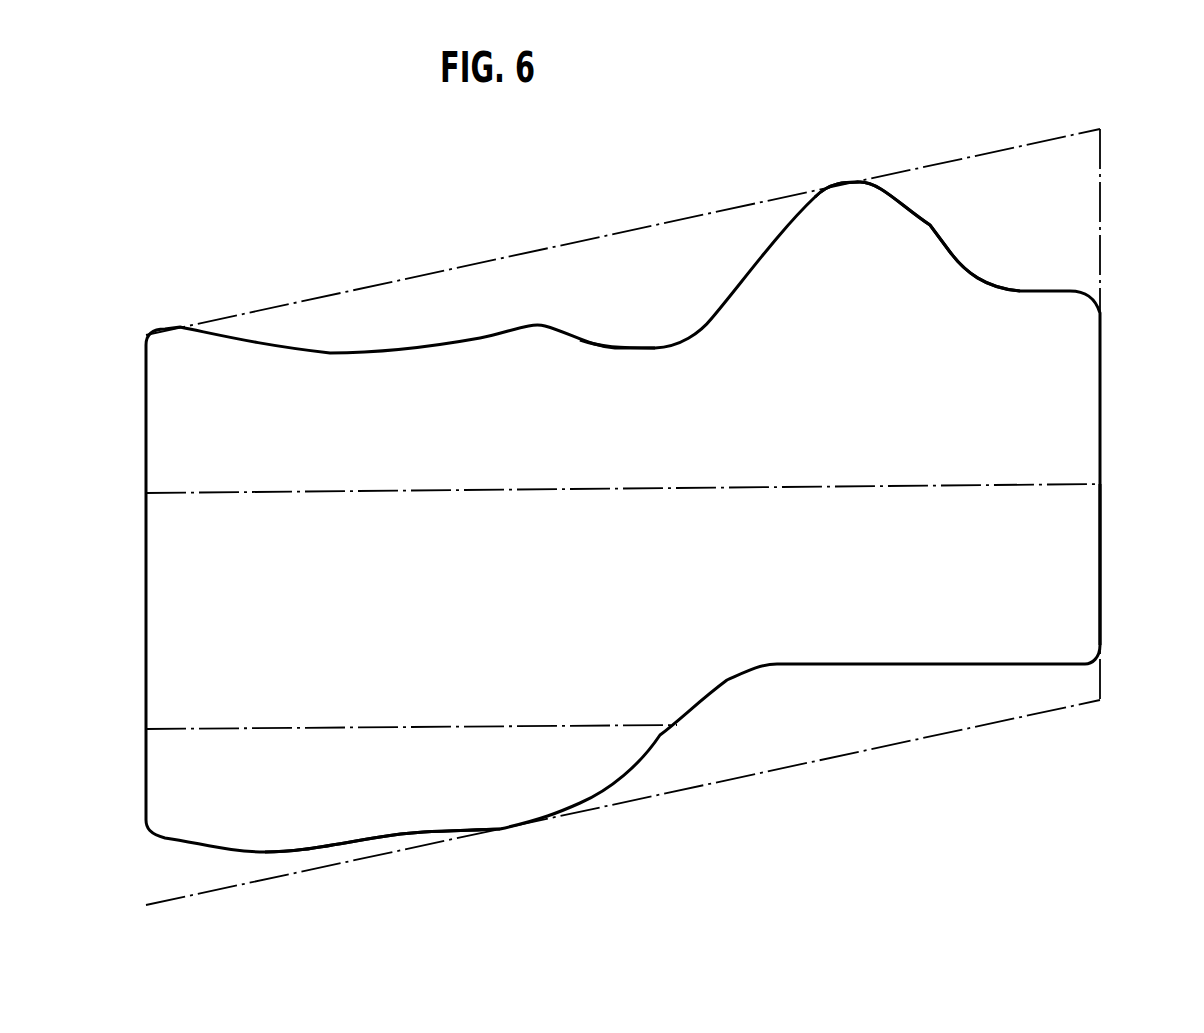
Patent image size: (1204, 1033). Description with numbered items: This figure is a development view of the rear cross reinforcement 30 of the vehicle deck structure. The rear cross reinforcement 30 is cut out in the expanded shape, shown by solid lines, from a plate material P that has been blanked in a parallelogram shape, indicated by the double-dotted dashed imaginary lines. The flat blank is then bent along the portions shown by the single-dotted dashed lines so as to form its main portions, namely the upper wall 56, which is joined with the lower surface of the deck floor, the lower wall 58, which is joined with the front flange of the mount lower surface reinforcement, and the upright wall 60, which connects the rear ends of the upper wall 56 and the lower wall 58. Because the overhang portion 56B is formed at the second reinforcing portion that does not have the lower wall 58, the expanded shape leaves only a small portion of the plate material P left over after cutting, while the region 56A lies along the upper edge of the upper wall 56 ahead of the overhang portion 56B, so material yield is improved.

The plate material P is at (1103, 233).
The upper wall 56 is at (1073, 392).
The first recessed portion 56A is at (600, 366).
The overhang portion 56B is at (852, 198).
The lower wall 58 is at (528, 797).
The upright wall 60 is at (1073, 540).
The rear cross reinforcement 30 is at (959, 262).